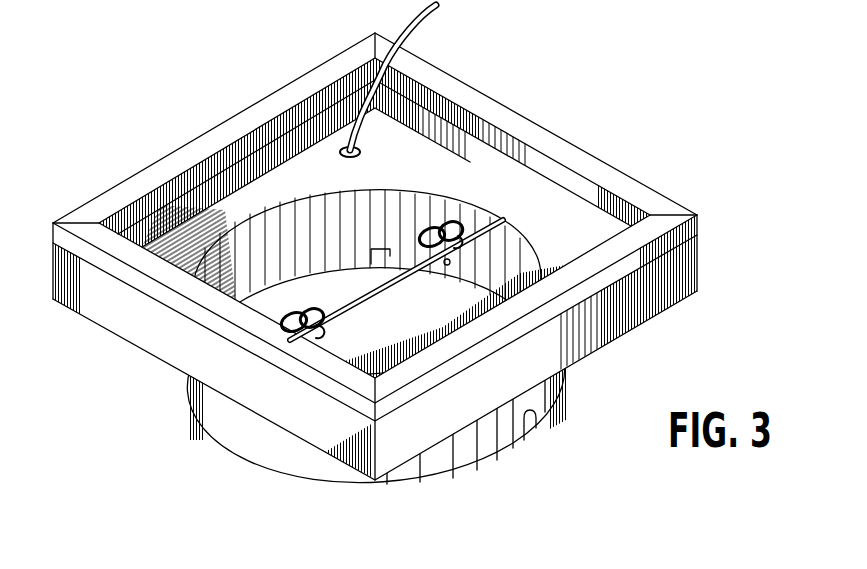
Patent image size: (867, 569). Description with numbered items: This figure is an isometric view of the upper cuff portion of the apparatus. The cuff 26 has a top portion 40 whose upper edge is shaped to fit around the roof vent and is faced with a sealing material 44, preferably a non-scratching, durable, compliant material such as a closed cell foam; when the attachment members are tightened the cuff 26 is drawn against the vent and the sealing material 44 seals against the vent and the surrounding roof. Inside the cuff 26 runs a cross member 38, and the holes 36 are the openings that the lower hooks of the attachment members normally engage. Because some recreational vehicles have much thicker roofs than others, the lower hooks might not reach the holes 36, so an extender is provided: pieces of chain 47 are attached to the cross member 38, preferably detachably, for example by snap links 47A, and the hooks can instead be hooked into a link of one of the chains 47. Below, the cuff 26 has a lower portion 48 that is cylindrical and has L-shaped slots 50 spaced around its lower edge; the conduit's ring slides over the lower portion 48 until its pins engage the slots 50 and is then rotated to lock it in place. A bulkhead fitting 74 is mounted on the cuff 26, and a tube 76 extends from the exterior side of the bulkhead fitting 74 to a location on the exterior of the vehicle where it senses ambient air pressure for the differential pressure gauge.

The cuff 26 is at (205, 446).
The holes 36 is at (447, 266).
The cross member 38 is at (360, 328).
The top portion 40 is at (667, 303).
The sealing material 44 is at (640, 193).
The chain 47 is at (422, 232).
The snap links 47A is at (466, 225).
The lower portion 48 is at (483, 456).
The L-shaped slots 50 is at (524, 432).
The bulkhead fitting 74 is at (340, 157).
The tube 76 is at (424, 27).